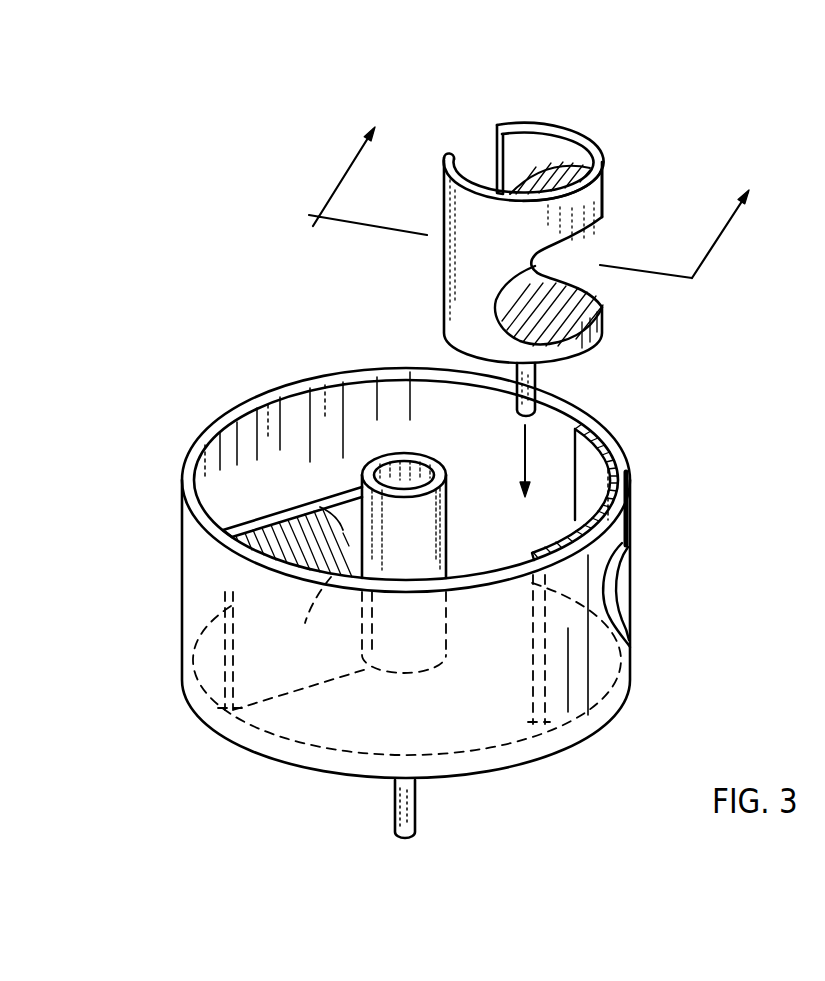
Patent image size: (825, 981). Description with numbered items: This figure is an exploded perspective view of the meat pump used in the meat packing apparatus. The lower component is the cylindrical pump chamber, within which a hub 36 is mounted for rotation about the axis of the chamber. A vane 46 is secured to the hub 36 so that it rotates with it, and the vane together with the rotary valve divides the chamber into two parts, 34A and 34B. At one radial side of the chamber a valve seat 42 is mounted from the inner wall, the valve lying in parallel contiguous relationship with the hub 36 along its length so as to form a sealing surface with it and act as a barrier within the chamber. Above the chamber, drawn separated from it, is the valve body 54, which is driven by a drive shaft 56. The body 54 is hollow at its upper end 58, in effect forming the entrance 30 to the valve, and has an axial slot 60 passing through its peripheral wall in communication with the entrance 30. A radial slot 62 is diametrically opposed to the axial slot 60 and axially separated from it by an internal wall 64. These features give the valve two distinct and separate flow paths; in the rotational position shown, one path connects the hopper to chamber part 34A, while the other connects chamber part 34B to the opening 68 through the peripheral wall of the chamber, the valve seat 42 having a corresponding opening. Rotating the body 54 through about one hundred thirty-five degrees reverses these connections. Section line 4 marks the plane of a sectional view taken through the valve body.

The entrance 30 is at (466, 170).
The axial slot 60 is at (496, 156).
The upper end 58 is at (523, 150).
The internal wall 64 is at (566, 152).
The valve body 54 is at (604, 198).
The radial slot 62 is at (606, 316).
The drive shaft 56 is at (537, 372).
The hub 36 is at (425, 527).
The chamber part 34A is at (248, 458).
The chamber part 34B is at (290, 552).
The vane 46 is at (358, 505).
The valve seat 42 is at (625, 462).
The opening 68 is at (628, 601).
The section line 4- 4 is at (523, 207).